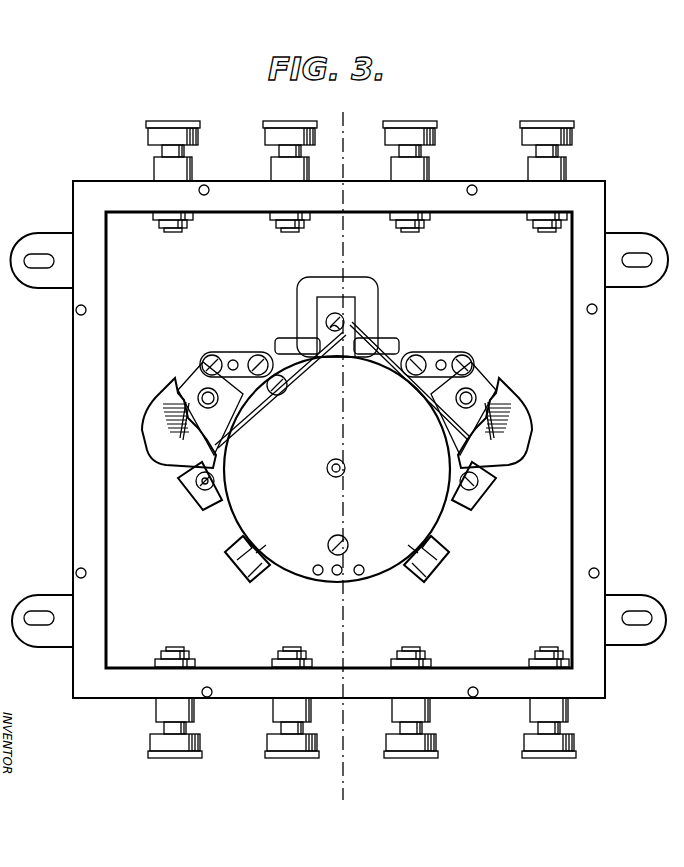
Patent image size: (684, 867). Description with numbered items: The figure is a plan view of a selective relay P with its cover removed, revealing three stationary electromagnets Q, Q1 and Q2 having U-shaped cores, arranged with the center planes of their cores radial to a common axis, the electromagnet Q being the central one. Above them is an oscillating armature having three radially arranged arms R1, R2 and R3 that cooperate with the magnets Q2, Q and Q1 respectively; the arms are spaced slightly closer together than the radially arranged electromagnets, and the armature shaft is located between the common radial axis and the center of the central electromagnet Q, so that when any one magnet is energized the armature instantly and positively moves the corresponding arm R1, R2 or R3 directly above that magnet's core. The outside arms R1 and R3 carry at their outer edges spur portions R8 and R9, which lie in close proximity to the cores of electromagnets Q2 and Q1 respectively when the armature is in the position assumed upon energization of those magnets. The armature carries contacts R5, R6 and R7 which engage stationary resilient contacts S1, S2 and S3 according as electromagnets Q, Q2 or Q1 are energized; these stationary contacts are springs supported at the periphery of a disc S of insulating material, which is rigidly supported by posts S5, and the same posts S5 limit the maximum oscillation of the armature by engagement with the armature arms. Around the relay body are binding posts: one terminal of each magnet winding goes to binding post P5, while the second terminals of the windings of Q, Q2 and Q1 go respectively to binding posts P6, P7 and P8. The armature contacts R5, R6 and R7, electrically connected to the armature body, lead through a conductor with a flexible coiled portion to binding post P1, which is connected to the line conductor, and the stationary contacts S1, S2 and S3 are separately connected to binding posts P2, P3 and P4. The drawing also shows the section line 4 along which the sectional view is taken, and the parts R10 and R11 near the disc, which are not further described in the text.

The selective relay P is at (598, 490).
The binding post P1 is at (548, 172).
The binding post P2 is at (412, 172).
The binding post P3 is at (288, 172).
The binding post P4 is at (168, 170).
The binding post P5 is at (558, 722).
The binding post P6 is at (420, 720).
The binding post P7 is at (290, 718).
The binding post P8 is at (178, 710).
The central stationary electromagnet Q is at (302, 300).
The stationary electromagnet Q1 is at (165, 410).
The stationary electromagnet Q2 is at (522, 420).
The armature arm R1 is at (512, 390).
The armature arm R2 is at (347, 302).
The armature arm R3 is at (205, 378).
The armature contact R5 is at (467, 393).
The armature contact R6 is at (348, 325).
The armature contact R7 is at (190, 362).
The spur portion R8 is at (505, 462).
The spur portion R9 is at (185, 462).
The right stop block R10 is at (440, 548).
The left stop block R11 is at (245, 565).
The insulating disc S is at (337, 469).
The stationary resilient contact S1 is at (470, 420).
The stationary resilient contact S2 is at (280, 386).
The stationary resilient contact S3 is at (220, 480).
The posts S5 is at (280, 393).
The section line 4- 4 is at (343, 451).